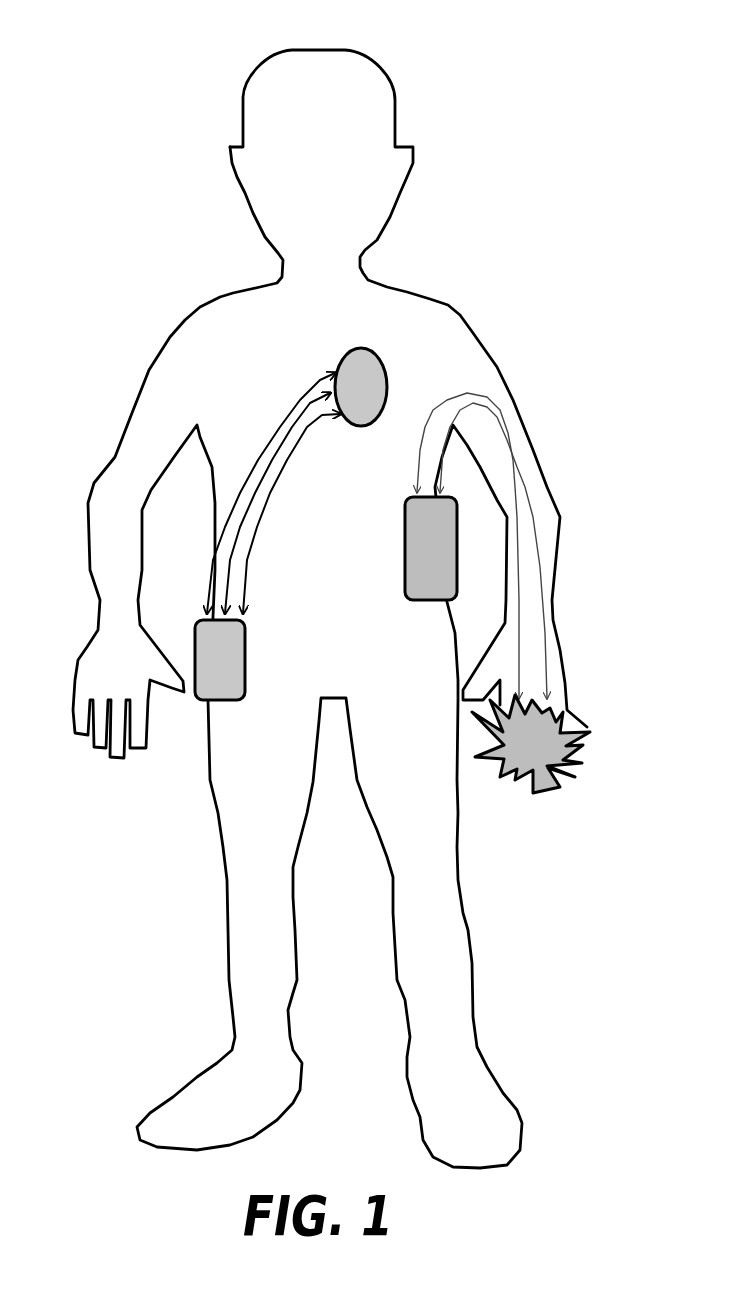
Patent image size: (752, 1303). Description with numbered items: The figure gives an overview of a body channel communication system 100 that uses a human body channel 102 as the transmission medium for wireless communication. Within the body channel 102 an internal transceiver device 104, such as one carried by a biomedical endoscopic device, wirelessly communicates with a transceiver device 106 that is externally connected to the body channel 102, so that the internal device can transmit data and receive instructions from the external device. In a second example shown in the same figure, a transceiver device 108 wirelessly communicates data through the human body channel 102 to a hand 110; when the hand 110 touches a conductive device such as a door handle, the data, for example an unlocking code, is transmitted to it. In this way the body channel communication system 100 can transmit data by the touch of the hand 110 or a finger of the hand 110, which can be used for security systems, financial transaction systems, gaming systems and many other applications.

The body channel communication system 100 is at (63, 230).
The human body channel 102 is at (170, 337).
The internal transceiver device 104 is at (387, 386).
The transceiver device 106 is at (245, 638).
The transceiver device 108 is at (405, 565).
The hand 110 is at (540, 782).